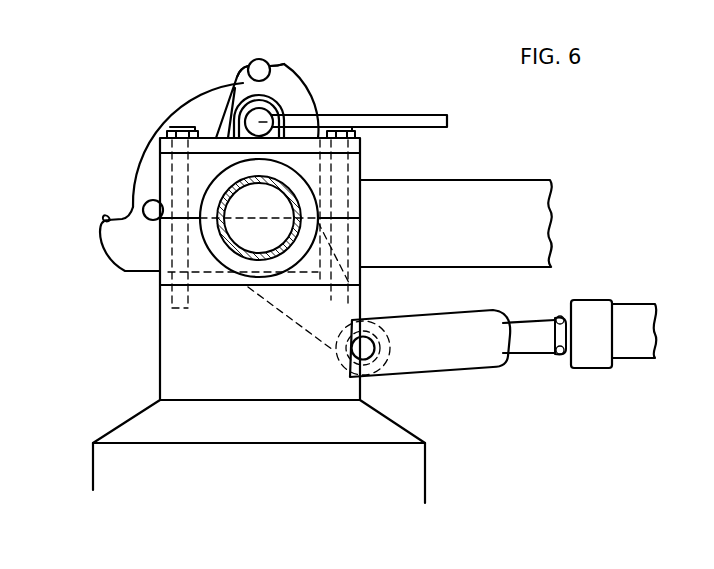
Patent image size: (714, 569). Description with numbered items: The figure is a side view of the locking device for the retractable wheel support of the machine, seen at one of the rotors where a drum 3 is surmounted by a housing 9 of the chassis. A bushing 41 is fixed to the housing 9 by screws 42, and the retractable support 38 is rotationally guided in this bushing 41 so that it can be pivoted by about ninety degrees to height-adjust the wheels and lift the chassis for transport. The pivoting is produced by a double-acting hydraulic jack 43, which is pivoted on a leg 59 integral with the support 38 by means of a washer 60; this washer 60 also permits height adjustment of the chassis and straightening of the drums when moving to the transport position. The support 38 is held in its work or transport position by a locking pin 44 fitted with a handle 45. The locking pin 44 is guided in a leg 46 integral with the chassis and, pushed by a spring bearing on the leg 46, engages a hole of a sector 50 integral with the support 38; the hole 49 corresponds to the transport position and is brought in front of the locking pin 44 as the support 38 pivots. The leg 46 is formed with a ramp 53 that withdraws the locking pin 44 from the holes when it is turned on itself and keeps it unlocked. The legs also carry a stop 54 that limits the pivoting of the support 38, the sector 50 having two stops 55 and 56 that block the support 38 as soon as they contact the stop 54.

The drum 3 is at (97, 478).
The housing 9 is at (168, 363).
The retractable support 38 is at (507, 190).
The bushing 41 is at (200, 182).
The screws 42 is at (186, 127).
The hydraulic jack 43 is at (592, 355).
The locking pin 44 is at (257, 118).
The handle 45 is at (406, 118).
The leg 46 is at (280, 95).
The hole 49 is at (153, 208).
The sector 50 is at (140, 245).
The ramp 53 is at (273, 101).
The stop 54 is at (262, 66).
The stop 55 is at (108, 226).
The stop 56 is at (286, 67).
The leg 59 is at (365, 313).
The washer 60 is at (372, 356).